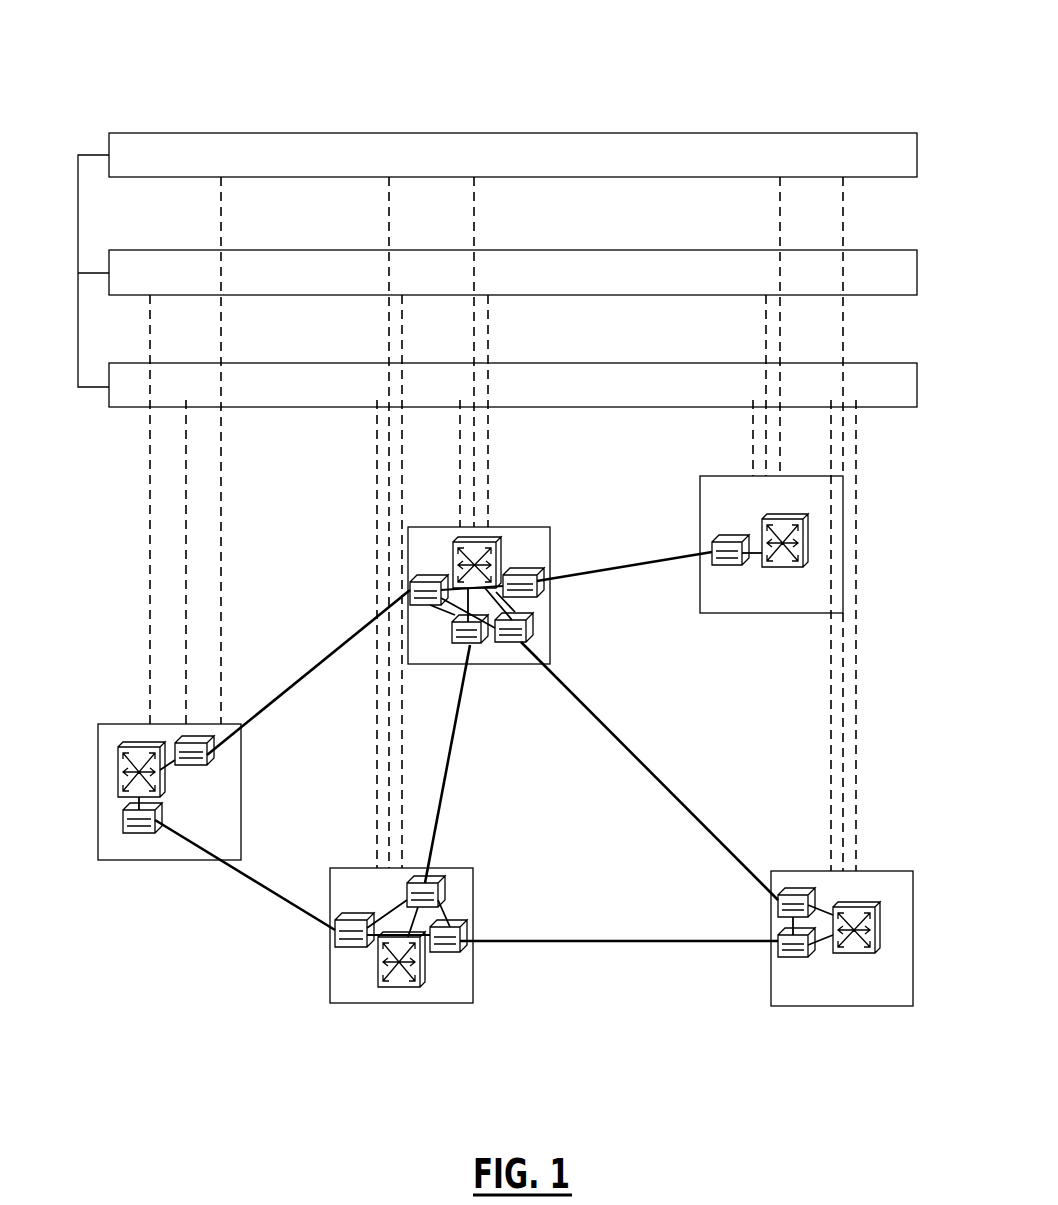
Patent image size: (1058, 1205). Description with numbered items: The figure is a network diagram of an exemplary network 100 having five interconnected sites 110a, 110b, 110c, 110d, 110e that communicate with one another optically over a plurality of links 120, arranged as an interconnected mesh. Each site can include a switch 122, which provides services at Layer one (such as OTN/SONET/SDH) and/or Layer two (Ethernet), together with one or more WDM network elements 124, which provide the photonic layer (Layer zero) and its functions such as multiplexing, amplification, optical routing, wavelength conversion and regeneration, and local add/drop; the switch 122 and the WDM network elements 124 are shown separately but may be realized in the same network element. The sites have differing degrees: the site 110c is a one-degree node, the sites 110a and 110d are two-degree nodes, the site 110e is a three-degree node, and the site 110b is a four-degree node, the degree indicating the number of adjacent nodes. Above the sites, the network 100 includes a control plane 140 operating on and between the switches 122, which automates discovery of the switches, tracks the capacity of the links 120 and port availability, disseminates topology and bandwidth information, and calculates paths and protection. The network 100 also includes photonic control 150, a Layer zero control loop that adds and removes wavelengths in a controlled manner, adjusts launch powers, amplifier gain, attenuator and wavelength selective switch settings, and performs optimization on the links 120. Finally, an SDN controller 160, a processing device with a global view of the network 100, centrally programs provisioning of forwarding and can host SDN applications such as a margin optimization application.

The network 100 is at (586, 44).
The SDN controller 160 is at (666, 133).
The photonic control 150 is at (666, 250).
The control plane 140 is at (666, 363).
The site 110a is at (98, 828).
The site 110b is at (515, 527).
The site 110c is at (789, 551).
The site 110d is at (818, 1006).
The site 110e is at (330, 985).
The links 120 is at (588, 572).
The switch 122 is at (788, 519).
The WDM network element 124 is at (732, 542).